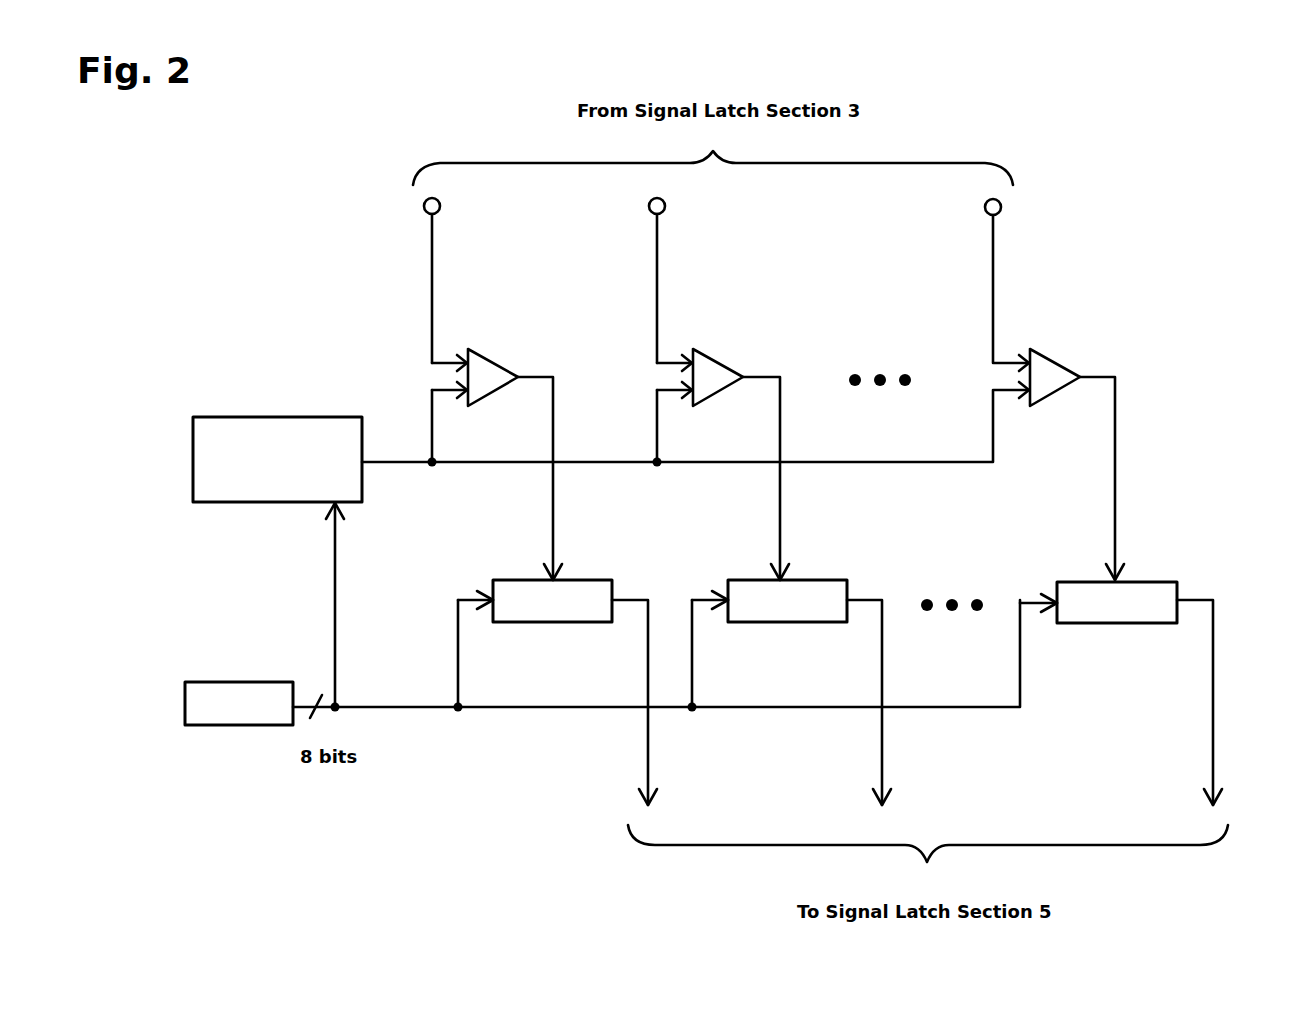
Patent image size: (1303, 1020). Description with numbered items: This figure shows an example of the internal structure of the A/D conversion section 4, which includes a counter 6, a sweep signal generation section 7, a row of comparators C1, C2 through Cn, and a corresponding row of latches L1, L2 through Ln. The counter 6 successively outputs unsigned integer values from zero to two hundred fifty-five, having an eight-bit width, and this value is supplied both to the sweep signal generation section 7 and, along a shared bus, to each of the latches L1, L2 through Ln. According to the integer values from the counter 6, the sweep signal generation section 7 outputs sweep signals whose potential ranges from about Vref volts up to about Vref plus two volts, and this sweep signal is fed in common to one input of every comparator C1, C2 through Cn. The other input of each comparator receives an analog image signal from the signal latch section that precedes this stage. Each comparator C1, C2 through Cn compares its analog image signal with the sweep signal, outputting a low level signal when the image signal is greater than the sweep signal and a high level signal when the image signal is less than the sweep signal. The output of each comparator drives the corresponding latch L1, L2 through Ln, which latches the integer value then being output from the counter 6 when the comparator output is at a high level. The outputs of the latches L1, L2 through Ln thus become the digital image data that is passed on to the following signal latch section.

The A/D conversion section 4 is at (1265, 148).
The counter 6 is at (272, 680).
The sweep signal generation section 7 is at (340, 416).
The comparator C1 is at (514, 349).
The comparator C2 is at (740, 350).
The comparator Cn is at (1077, 353).
The latch L1 is at (611, 567).
The latch L2 is at (847, 567).
The latch Ln is at (1177, 569).